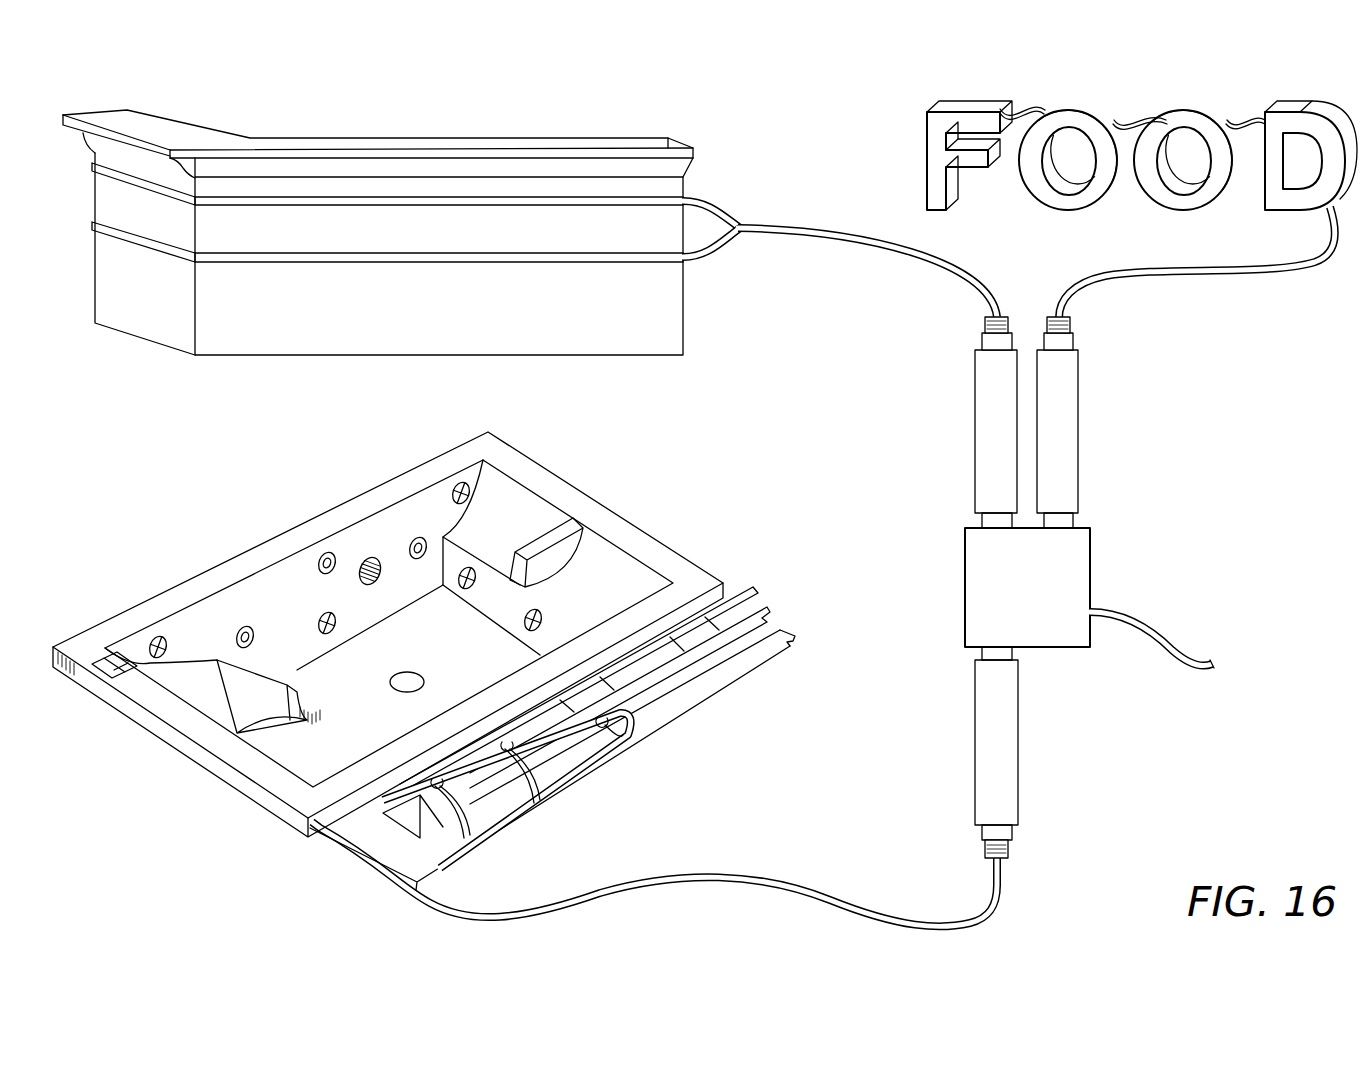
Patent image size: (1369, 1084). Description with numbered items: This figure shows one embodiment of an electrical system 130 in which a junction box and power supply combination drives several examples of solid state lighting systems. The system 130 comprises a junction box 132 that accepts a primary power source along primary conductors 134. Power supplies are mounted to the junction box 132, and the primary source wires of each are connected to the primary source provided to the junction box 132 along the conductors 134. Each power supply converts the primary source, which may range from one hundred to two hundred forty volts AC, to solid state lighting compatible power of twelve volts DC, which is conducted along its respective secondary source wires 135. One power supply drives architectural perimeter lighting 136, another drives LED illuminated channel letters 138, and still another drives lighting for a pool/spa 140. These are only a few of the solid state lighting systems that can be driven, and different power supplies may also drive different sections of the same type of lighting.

The electrical system 130 is at (742, 129).
The junction box 132 is at (1094, 552).
The primary conductors 134 is at (1187, 653).
The secondary source wires 135 is at (868, 243).
The architectural perimeter lighting 136 is at (242, 262).
The LED illuminated channel letters 138 is at (1078, 102).
The pool/spa lighting 140 is at (217, 563).